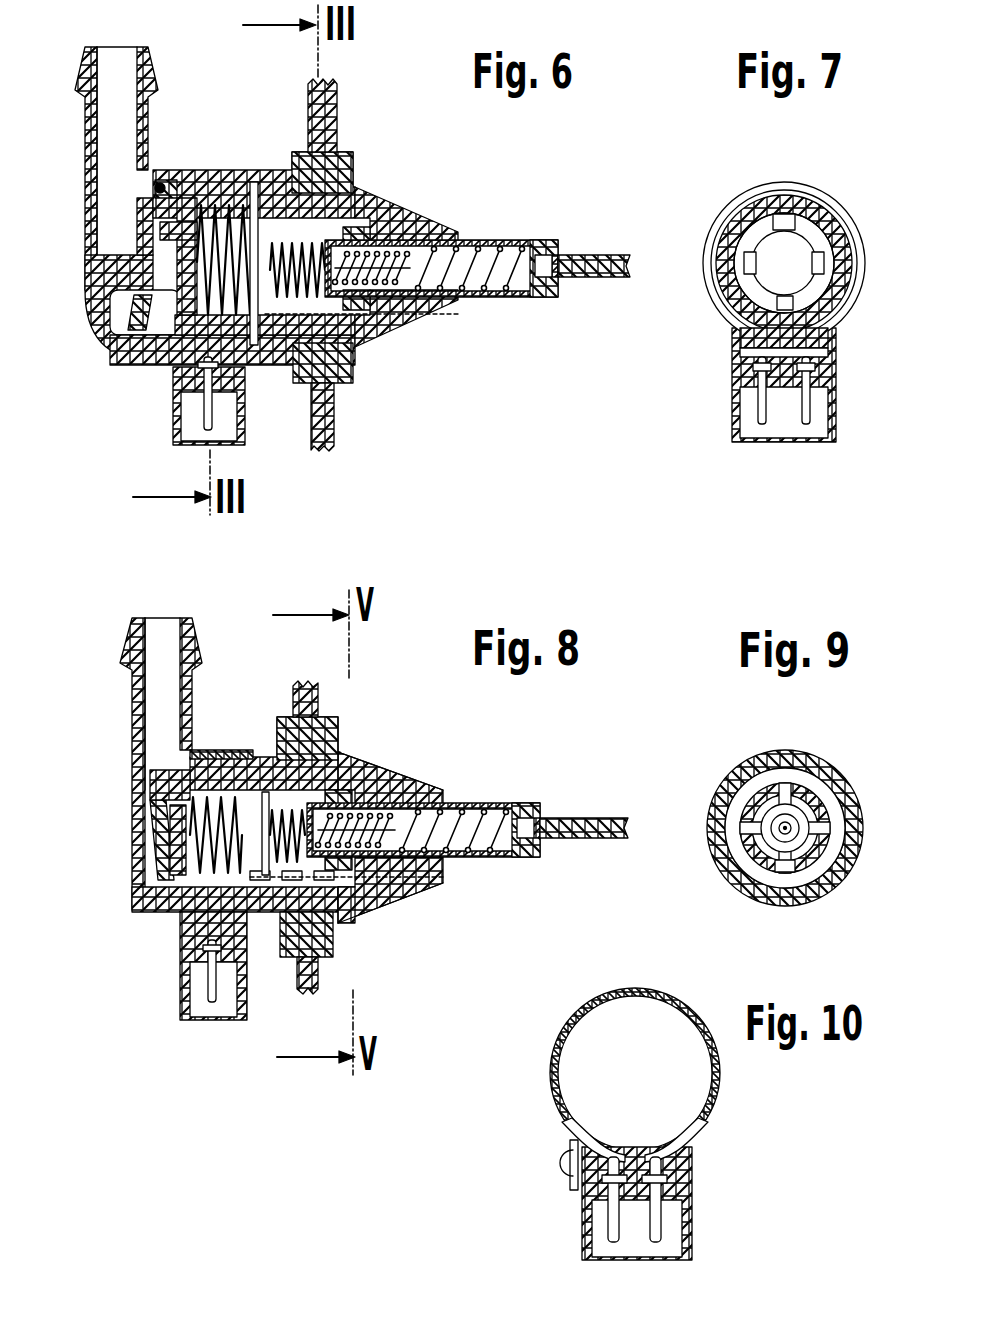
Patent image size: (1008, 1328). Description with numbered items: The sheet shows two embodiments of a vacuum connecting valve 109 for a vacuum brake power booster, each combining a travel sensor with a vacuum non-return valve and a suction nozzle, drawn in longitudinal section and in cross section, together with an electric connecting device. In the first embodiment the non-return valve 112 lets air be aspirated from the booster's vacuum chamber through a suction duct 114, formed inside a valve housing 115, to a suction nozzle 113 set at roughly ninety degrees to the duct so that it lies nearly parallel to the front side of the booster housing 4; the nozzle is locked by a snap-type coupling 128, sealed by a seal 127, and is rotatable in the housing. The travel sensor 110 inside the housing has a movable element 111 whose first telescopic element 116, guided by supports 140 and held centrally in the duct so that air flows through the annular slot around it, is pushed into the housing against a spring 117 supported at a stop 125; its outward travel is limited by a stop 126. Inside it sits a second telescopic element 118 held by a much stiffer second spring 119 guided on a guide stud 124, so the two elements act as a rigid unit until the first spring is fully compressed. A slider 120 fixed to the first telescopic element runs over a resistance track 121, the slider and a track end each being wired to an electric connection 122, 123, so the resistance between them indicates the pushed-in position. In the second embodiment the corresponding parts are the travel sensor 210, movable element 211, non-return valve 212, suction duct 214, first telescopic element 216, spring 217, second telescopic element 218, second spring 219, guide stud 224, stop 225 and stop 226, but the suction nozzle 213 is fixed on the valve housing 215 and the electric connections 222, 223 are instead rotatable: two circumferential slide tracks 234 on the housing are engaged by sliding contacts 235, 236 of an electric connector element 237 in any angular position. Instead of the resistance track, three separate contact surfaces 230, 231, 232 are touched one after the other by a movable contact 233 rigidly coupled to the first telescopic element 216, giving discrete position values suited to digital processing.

In FIG. 6, the booster housing 4 is at (338, 105).
In FIG. 8, the booster housing 4 is at (302, 683).
In FIG. 6, the vacuum connecting valve 109 is at (366, 142).
In FIG. 6, the travel sensor 110 is at (385, 330).
In FIG. 6, the movable element 111 is at (498, 222).
In FIG. 6, the non-return valve 112 is at (142, 337).
In FIG. 6, the suction nozzle 113 is at (122, 64).
In FIG. 6, the suction duct 114 is at (283, 250).
In FIG. 7, the suction duct 114 is at (810, 236).
In FIG. 6, the valve housing 115 is at (272, 355).
In FIG. 7, the valve housing 115 is at (784, 385).
In FIG. 10, the valve housing 115 is at (626, 1200).
In FIG. 6, the first telescopic element 116 is at (538, 240).
In FIG. 7, the first telescopic element 116 is at (766, 258).
In FIG. 6, the spring 117 is at (260, 233).
In FIG. 6, the second telescopic element 118 is at (600, 257).
In FIG. 6, the second spring 119 is at (497, 297).
In FIG. 6, the slider 120 is at (363, 345).
In FIG. 7, the slider 120 is at (740, 309).
In FIG. 6, the resistance track 121 is at (348, 382).
In FIG. 7, the resistance track 121 is at (738, 348).
In FIG. 6, the electric connection 122 is at (193, 432).
In FIG. 7, the electric connection 122 is at (808, 424).
In FIG. 6, the electric connection 123 is at (208, 365).
In FIG. 7, the electric connection 123 is at (762, 424).
In FIG. 6, the guide stud 124 is at (423, 312).
In FIG. 6, the stop 125 is at (160, 367).
In FIG. 6, the stop 126 is at (382, 230).
In FIG. 6, the seal 127 is at (172, 184).
In FIG. 6, the snap-type coupling 128 is at (210, 173).
In FIG. 6, the supports 140 is at (417, 223).
In FIG. 7, the supports 140 is at (787, 221).
In FIG. 8, the travel sensor 210 is at (362, 897).
In FIG. 8, the movable element 211 is at (531, 790).
In FIG. 8, the non-return valve 212 is at (148, 807).
In FIG. 8, the suction nozzle 213 is at (158, 627).
In FIG. 8, the suction duct 214 is at (268, 800).
In FIG. 9, the suction duct 214 is at (823, 790).
In FIG. 8, the valve housing 215 is at (352, 765).
In FIG. 9, the valve housing 215 is at (732, 783).
In FIG. 8, the first telescopic element 216 is at (493, 803).
In FIG. 9, the first telescopic element 216 is at (747, 860).
In FIG. 8, the spring 217 is at (180, 917).
In FIG. 8, the second telescopic element 218 is at (583, 828).
In FIG. 8, the second spring 219 is at (452, 857).
In FIG. 8, the electric connection 222 is at (213, 1017).
In FIG. 10, the electric connection 222 is at (668, 1223).
In FIG. 8, the electric connection 223 is at (212, 971).
In FIG. 10, the electric connection 223 is at (608, 1225).
In FIG. 8, the guide stud 224 is at (387, 803).
In FIG. 8, the stop 225 is at (152, 912).
In FIG. 8, the stop 226 is at (362, 792).
In FIG. 8, the contact surface 230 is at (260, 913).
In FIG. 8, the contact surface 231 is at (327, 957).
In FIG. 8, the contact surface 232 is at (350, 917).
In FIG. 8, the movable contact 233 is at (390, 887).
In FIG. 9, the movable contact 233 is at (785, 887).
In FIG. 8, the slide tracks 234 is at (213, 747).
In FIG. 10, the sliding contact 235 is at (693, 1115).
In FIG. 10, the sliding contact 236 is at (555, 1115).
In FIG. 10, the electric connector element 237 is at (552, 1063).